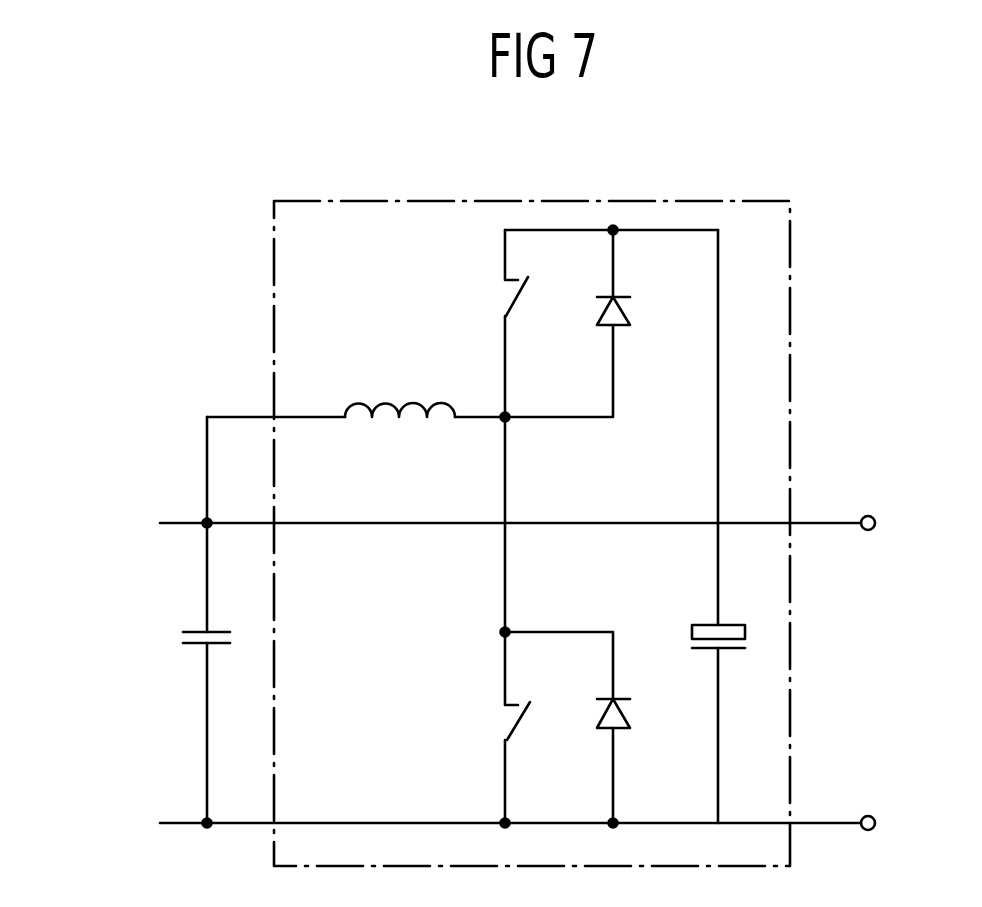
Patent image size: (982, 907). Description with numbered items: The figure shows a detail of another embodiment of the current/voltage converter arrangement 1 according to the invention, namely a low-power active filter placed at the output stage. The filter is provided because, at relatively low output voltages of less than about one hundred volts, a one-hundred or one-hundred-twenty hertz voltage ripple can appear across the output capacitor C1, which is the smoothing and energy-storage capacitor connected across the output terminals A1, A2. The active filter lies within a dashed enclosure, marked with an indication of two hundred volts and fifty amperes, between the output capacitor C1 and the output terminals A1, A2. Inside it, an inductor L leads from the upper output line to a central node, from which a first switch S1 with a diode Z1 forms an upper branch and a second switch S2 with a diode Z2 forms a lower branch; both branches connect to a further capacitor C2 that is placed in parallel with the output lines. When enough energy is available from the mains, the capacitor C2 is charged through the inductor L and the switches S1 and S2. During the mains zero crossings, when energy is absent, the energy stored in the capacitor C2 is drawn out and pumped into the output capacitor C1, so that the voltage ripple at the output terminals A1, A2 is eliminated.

The current/voltage converter arrangement 1 is at (127, 282).
The switch S1 is at (502, 297).
The switch S2 is at (508, 718).
The diode Z1 is at (631, 320).
The diode Z2 is at (632, 723).
The inductor L is at (412, 420).
The output capacitor C1 is at (200, 628).
The capacitor C2 is at (703, 625).
The output terminal A1 is at (818, 523).
The output terminal A2 is at (818, 823).